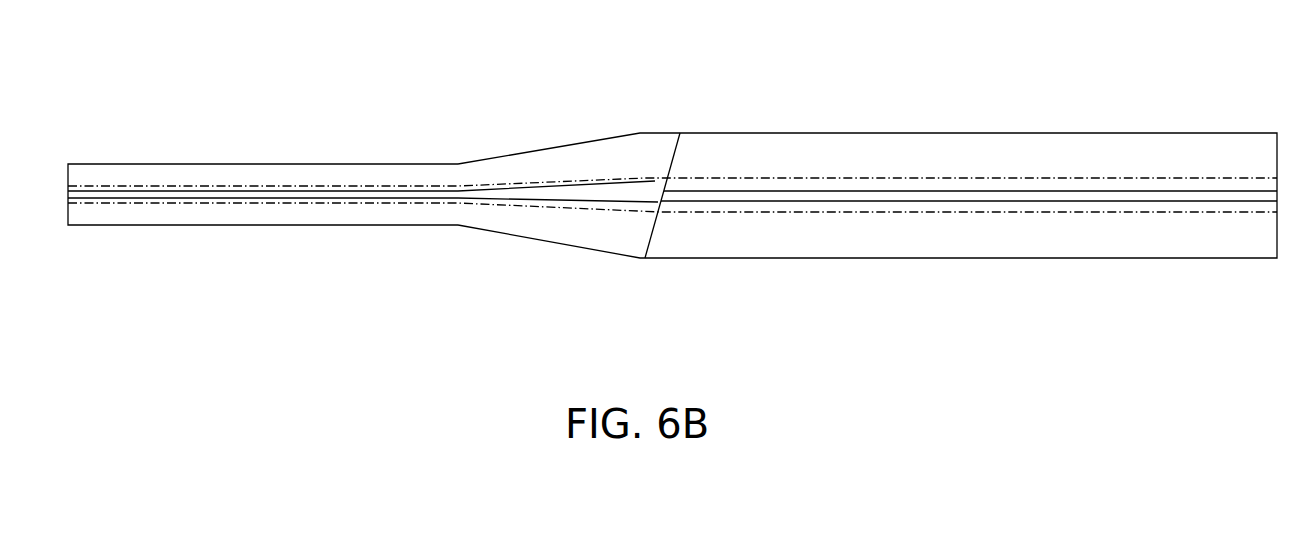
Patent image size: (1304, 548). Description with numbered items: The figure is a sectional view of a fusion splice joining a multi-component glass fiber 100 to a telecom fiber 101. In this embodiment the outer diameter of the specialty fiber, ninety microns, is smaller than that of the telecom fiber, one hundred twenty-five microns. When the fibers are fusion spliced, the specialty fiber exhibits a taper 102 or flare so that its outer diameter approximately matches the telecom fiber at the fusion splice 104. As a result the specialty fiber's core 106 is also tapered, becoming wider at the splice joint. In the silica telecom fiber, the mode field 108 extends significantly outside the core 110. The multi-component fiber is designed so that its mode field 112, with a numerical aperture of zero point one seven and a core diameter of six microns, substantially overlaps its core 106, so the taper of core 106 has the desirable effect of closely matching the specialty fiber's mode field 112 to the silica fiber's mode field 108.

The multi-component glass fiber 100 is at (132, 154).
The telecom fiber 101 is at (1002, 122).
The taper 102 is at (577, 165).
The fusion splice 104 is at (657, 188).
The core 106 is at (567, 195).
The mode field 108 is at (730, 177).
The core 110 is at (827, 193).
The mode field 112 is at (290, 185).